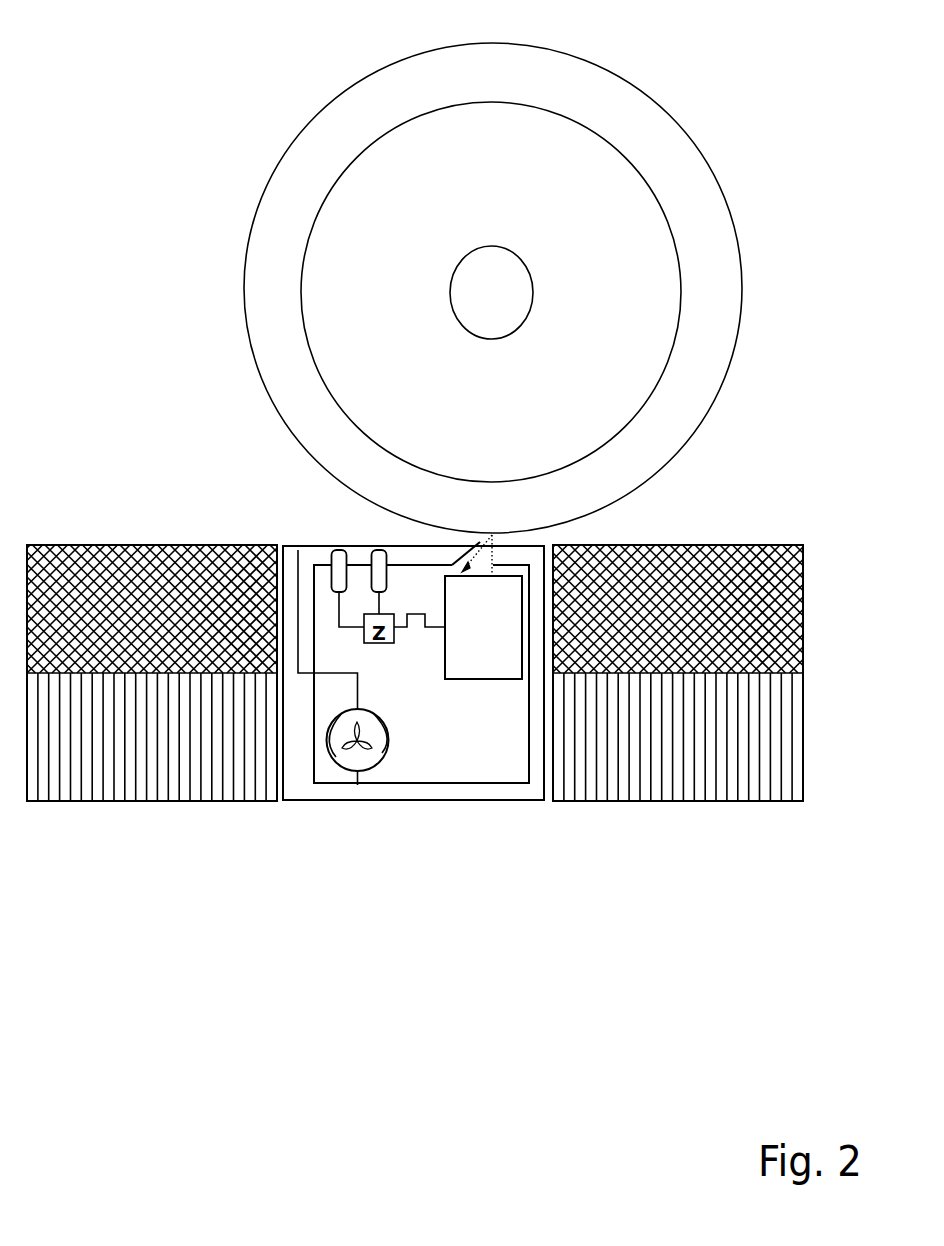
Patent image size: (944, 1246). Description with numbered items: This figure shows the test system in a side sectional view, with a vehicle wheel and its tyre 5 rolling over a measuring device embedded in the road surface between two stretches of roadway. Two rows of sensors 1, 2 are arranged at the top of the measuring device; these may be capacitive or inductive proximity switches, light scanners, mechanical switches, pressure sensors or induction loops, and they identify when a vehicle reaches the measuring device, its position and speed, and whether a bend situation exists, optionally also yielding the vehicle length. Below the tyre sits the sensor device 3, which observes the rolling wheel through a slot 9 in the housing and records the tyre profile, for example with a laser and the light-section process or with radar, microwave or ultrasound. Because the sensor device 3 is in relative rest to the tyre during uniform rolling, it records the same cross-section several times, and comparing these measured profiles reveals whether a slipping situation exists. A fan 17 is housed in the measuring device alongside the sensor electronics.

The sensor row 1 is at (332, 550).
The sensor row 2 is at (372, 550).
The sensor device 3 is at (483, 679).
The tire 5 is at (743, 289).
The opening 9 is at (462, 563).
The fan 17 is at (388, 740).